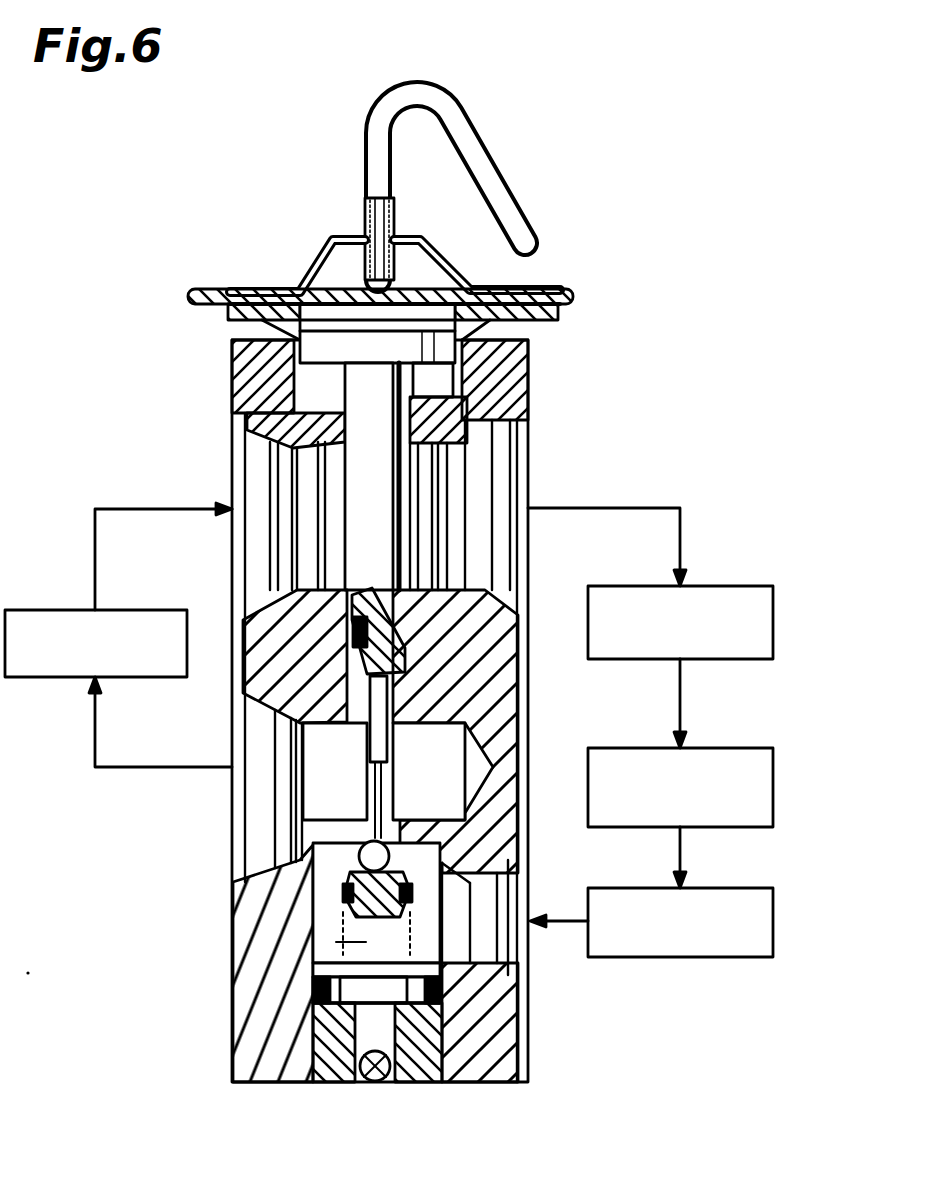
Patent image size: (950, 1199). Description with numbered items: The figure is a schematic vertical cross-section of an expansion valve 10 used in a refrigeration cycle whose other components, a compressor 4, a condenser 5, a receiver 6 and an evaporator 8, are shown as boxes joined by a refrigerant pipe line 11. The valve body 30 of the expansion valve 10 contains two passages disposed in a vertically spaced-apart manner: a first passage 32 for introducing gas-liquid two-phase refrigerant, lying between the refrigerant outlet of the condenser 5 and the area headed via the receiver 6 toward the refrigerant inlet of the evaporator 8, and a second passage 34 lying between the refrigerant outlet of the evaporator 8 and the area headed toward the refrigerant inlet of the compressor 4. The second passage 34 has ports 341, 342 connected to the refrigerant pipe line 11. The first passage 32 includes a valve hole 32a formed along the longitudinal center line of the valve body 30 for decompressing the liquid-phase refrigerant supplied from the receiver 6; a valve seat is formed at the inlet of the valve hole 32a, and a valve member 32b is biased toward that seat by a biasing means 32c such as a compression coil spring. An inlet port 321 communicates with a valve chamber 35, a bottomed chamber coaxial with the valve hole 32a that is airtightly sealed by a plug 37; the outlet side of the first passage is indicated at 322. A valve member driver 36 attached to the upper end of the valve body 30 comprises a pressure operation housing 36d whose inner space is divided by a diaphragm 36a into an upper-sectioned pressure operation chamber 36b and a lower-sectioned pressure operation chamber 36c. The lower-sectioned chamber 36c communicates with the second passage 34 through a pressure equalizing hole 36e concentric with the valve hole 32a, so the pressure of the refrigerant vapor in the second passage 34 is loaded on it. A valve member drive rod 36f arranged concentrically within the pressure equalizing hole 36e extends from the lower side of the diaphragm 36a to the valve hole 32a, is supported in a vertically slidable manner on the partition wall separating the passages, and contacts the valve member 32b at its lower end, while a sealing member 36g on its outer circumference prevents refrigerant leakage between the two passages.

The compressor 4 is at (716, 586).
The condenser 5 is at (748, 748).
The receiver 6 is at (744, 888).
The evaporator 8 is at (43, 610).
The expansion valve 10 is at (603, 462).
The refrigerant pipe line 11 is at (683, 695).
The valve body 30 is at (528, 370).
The first passage 32 is at (323, 727).
The valve hole 32a is at (392, 832).
The valve member 32b is at (415, 868).
The biasing means 32c is at (345, 894).
The second passage 34 is at (498, 588).
The valve chamber 35 is at (367, 942).
The valve member driver 36 is at (600, 303).
The diaphragm 36a is at (528, 280).
The upper-sectioned pressure operation chamber 36b is at (422, 273).
The lower-sectioned pressure operation chamber 36c is at (322, 374).
The pressure operation housing 36d is at (255, 290).
The pressure equalizing hole 36e is at (242, 418).
The valve member drive rod 36f is at (360, 526).
The sealing member 36g is at (405, 640).
The plug 37 is at (427, 1083).
The inlet port 321 is at (518, 962).
The outlet passage 322 is at (234, 885).
The port 341 is at (528, 587).
The port 342 is at (240, 614).